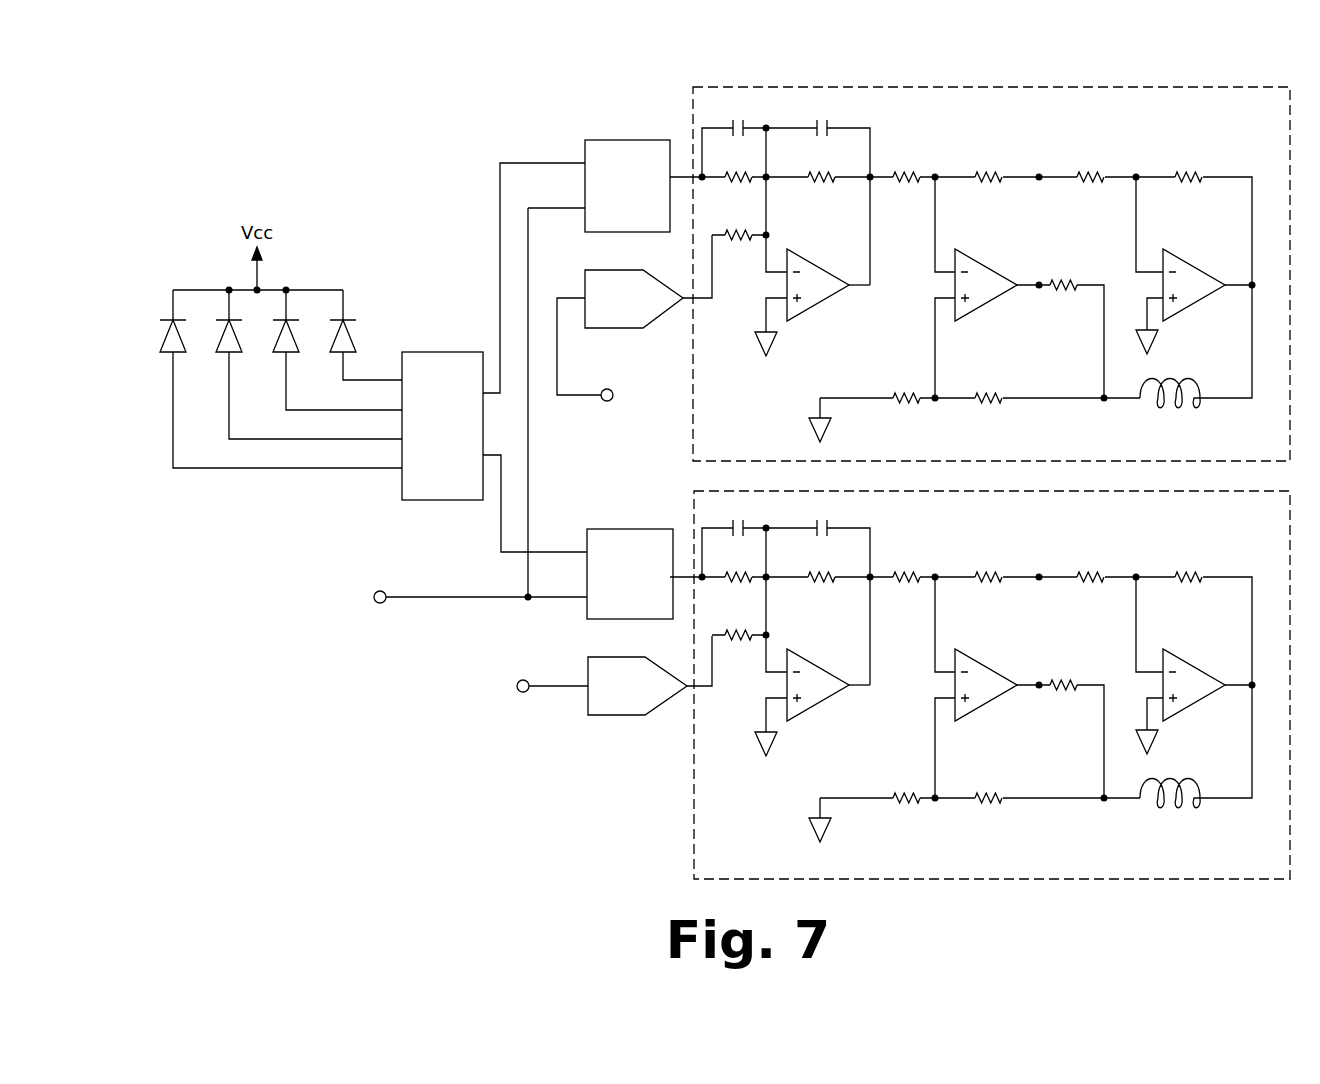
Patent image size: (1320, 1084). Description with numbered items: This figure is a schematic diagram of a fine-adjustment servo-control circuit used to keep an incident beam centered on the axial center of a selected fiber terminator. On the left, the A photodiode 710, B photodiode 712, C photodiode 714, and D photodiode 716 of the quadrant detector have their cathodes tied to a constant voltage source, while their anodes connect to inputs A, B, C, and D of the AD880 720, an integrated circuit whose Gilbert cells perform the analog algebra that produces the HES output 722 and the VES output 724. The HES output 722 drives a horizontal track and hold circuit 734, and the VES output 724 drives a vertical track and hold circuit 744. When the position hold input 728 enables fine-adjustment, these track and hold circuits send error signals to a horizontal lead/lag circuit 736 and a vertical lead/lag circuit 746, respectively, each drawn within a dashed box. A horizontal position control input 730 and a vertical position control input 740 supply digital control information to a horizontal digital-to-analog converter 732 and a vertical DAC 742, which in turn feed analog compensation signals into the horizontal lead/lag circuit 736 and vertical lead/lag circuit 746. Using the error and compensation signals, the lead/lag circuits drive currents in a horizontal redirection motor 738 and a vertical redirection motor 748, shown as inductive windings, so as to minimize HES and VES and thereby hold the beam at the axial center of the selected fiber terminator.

The A photodiode 710 is at (176, 352).
The B photodiode 712 is at (232, 352).
The C photodiode 714 is at (289, 352).
The D photodiode 716 is at (353, 342).
The AD880 720 is at (420, 500).
The HES output 722 is at (483, 352).
The VES output 724 is at (501, 500).
The position hold input 728 is at (378, 591).
The horizontal position control input 730 is at (607, 389).
The horizontal digital-to-analog-converter 732 is at (610, 270).
The horizontal track and hold circuit 734 is at (585, 146).
The horizontal lead/lag circuit 736 is at (693, 97).
The horizontal redirection motor 738 is at (1198, 413).
The vertical position control input 740 is at (521, 681).
The vertical DAC 742 is at (612, 657).
The vertical track and hold circuit 744 is at (610, 529).
The vertical lead/lag circuit 746 is at (695, 863).
The vertical redirection motor 748 is at (1198, 813).